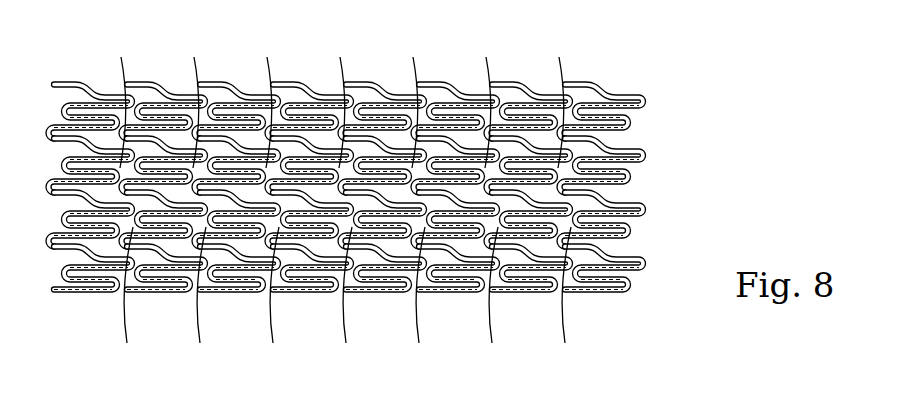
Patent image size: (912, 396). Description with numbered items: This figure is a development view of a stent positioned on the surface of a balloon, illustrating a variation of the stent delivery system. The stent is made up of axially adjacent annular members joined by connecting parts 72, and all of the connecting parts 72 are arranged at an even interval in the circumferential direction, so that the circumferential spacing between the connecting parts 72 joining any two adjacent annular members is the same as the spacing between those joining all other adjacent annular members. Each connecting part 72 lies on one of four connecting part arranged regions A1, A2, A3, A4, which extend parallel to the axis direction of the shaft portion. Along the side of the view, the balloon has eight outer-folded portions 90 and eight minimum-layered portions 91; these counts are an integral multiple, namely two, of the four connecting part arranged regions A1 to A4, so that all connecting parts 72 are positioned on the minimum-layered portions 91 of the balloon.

The connecting parts 72 is at (345, 204).
The outer-folded portions 90 is at (366, 188).
The minimum-layered portions 91 is at (385, 180).
The connecting part arranged region A1 is at (47, 128).
The connecting part arranged region A2 is at (47, 182).
The connecting part arranged region A3 is at (47, 236).
The connecting part arranged region A4 is at (47, 288).